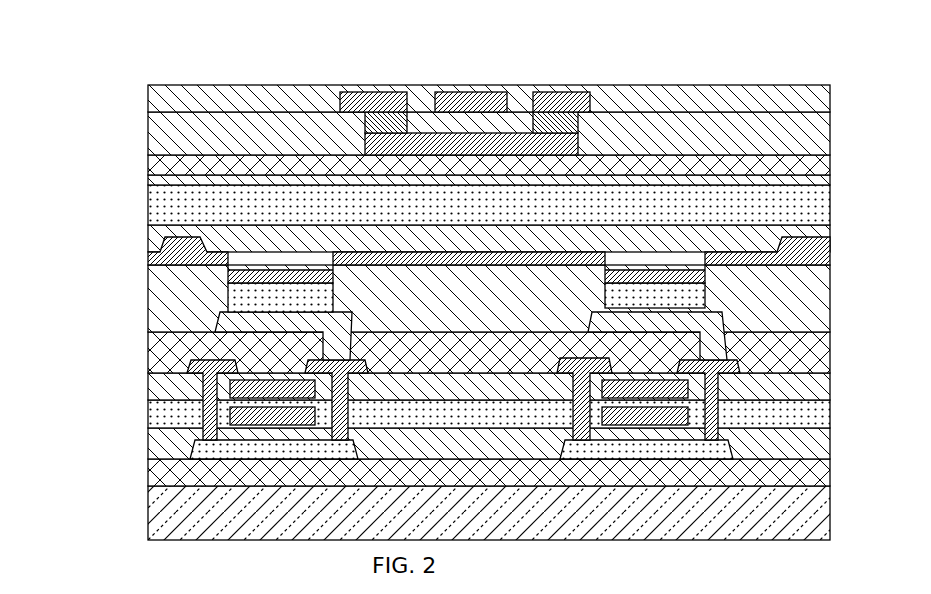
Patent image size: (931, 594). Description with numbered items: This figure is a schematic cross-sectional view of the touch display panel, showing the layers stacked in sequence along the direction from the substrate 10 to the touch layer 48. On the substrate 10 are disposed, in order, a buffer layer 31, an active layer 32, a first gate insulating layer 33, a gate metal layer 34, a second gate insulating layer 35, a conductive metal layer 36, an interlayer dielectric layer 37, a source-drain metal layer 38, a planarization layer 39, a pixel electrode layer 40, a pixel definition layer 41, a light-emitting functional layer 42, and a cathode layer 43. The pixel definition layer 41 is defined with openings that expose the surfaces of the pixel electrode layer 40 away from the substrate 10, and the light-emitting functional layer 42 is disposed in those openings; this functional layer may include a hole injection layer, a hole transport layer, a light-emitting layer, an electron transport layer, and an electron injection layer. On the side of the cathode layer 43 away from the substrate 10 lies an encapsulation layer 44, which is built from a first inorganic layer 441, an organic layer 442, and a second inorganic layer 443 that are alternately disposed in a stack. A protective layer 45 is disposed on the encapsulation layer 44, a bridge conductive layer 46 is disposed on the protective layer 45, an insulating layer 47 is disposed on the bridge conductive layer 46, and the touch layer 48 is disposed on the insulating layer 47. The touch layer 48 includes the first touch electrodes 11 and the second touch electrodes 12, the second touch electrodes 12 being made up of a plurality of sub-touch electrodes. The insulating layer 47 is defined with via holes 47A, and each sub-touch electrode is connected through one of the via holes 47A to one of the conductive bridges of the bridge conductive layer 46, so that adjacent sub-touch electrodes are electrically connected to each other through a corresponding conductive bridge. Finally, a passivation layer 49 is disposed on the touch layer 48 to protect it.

The substrate 10 is at (832, 512).
The buffer layer 31 is at (832, 465).
The active layer 32 is at (735, 443).
The first gate insulating layer 33 is at (150, 445).
The gate metal layer 34 is at (690, 410).
The second gate insulating layer 35 is at (150, 412).
The conductive metal layer 36 is at (692, 383).
The interlayer dielectric layer 37 is at (150, 388).
The source-drain metal layer 38 is at (742, 363).
The planarization layer 39 is at (150, 348).
The pixel electrode layer 40 is at (722, 315).
The pixel definition layer 41 is at (817, 287).
The light-emitting functional layer 42 is at (230, 298).
The cathode layer 43 is at (810, 247).
The encapsulation layer 44 is at (426, 210).
The first inorganic layer 441 is at (150, 240).
The organic layer 442 is at (150, 205).
The second inorganic layer 443 is at (150, 181).
The protective layer 45 is at (832, 162).
The bridge conductive layer 46 is at (365, 150).
The insulating layer 47 is at (832, 128).
The via holes 47A is at (388, 112).
The touch layer 48 is at (340, 105).
The first touch electrodes 11 is at (466, 98).
The second touch electrodes 12 is at (560, 98).
The passivation layer 49 is at (832, 98).